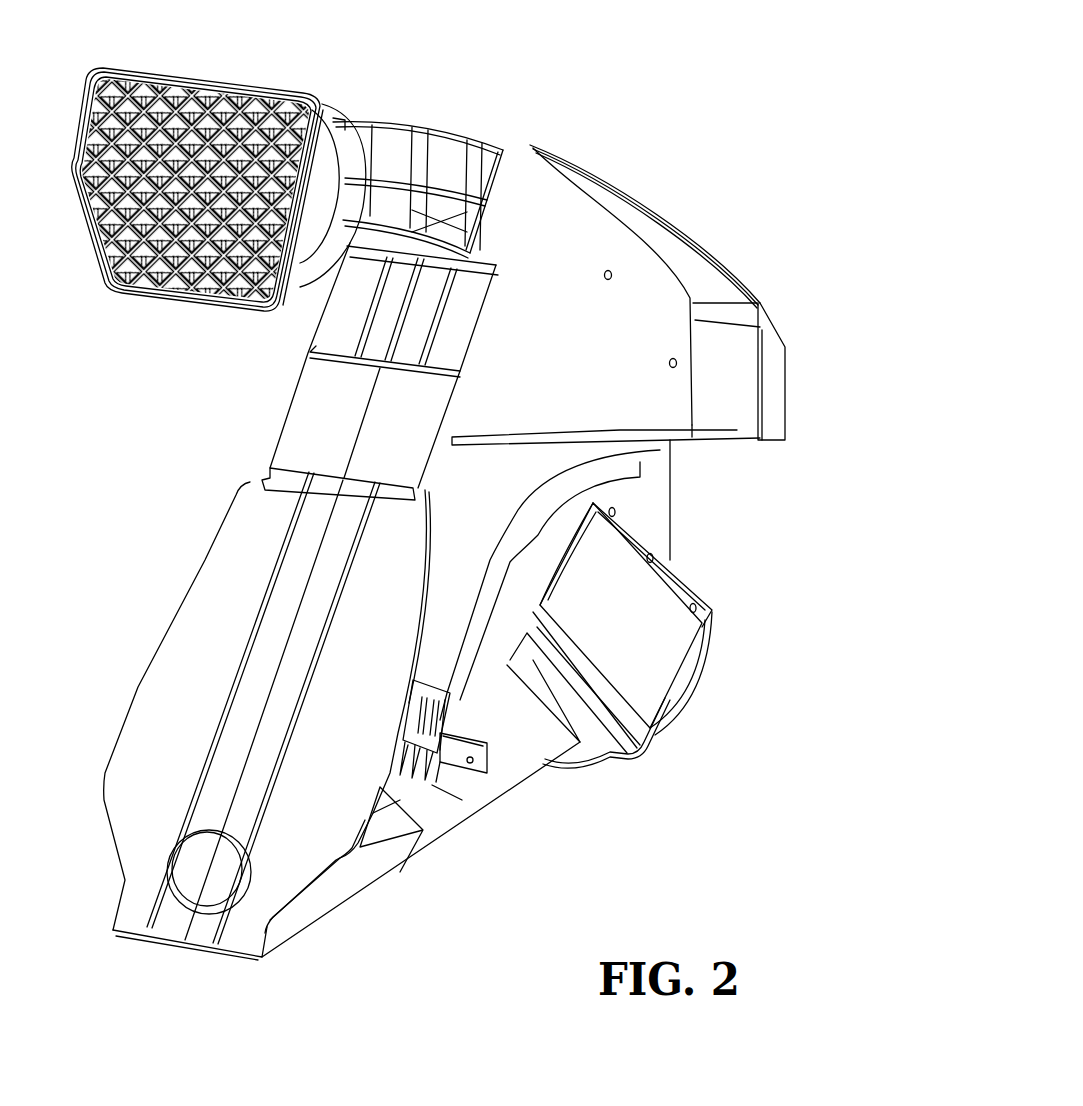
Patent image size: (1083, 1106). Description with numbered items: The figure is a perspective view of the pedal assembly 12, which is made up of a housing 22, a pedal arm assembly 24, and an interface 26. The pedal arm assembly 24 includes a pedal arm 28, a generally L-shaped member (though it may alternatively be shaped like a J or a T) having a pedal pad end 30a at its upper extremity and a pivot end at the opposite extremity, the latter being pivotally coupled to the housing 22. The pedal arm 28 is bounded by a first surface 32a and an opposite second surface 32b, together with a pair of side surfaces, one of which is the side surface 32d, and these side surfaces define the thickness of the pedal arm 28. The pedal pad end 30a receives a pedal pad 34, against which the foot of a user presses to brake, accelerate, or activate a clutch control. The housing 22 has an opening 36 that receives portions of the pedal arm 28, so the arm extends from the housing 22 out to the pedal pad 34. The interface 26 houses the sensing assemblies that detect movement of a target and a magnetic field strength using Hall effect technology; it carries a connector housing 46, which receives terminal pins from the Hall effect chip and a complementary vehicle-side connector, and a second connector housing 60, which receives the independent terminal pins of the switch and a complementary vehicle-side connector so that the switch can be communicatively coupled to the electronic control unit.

The pedal assembly 12 is at (903, 339).
The housing 22 is at (808, 299).
The pedal arm assembly 24 is at (416, 109).
The interface 26 is at (469, 824).
The pedal arm 28 is at (440, 160).
The pedal pad end 30a is at (358, 120).
The first surface 32a is at (405, 205).
The second surface 32b is at (392, 123).
The side surface 32d is at (383, 207).
The pedal pad 34 is at (165, 292).
The opening 36 is at (433, 205).
The connector housing 46 is at (430, 672).
The second connector housing 60 is at (496, 756).